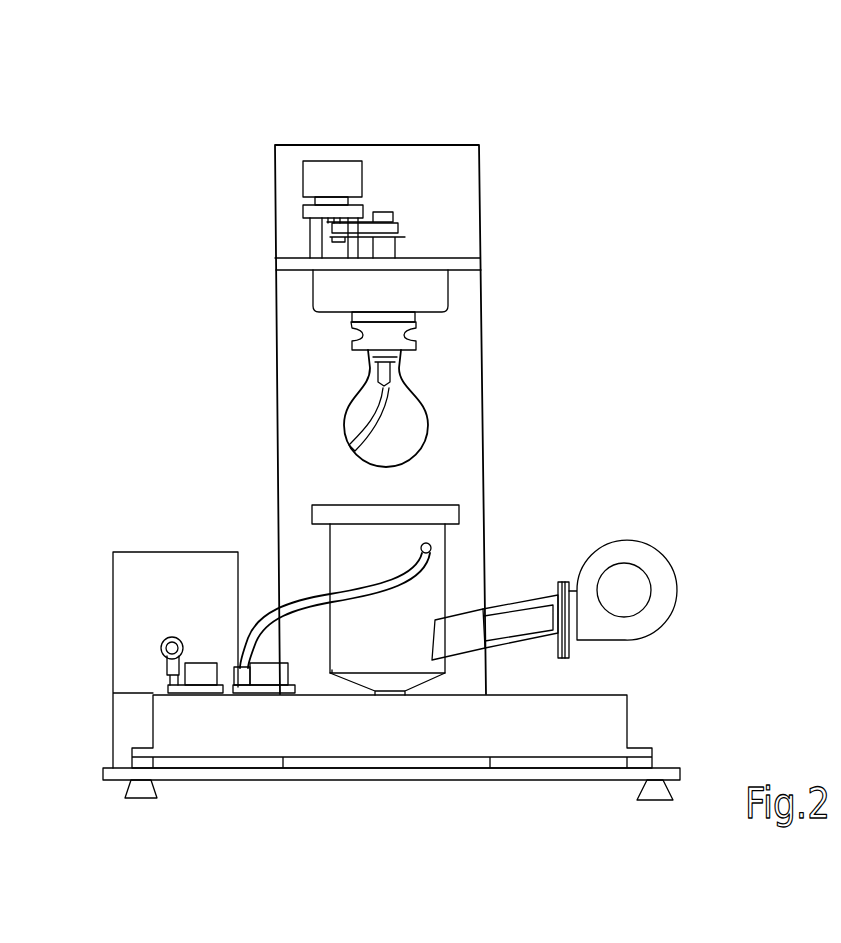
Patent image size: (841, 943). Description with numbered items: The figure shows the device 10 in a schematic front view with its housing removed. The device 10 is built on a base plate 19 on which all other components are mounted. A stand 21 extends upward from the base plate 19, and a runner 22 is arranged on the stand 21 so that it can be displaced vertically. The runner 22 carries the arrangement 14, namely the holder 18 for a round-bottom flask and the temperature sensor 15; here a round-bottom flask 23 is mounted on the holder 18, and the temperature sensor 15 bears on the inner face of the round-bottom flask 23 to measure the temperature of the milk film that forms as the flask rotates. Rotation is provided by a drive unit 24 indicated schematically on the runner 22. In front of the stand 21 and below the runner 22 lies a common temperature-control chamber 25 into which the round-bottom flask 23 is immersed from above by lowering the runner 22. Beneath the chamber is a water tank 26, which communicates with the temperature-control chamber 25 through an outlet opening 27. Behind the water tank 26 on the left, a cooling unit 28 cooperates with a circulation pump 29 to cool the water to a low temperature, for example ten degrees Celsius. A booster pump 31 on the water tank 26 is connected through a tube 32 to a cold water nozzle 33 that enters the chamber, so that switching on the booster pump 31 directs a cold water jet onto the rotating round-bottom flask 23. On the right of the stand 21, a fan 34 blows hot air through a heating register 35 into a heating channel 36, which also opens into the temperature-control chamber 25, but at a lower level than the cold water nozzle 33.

The device 10 is at (533, 108).
The arrangement 14 is at (440, 222).
The temperature sensor 15 is at (352, 447).
The holder 18 is at (412, 333).
The base plate 19 is at (203, 777).
The stand 21 is at (463, 466).
The runner 22 is at (470, 267).
The round-bottom flask 23 is at (428, 418).
The drive unit 24 is at (365, 193).
The temperature-control chamber 25 is at (430, 580).
The water tank 26 is at (612, 727).
The outlet opening 27 is at (392, 692).
The cooling unit 28 is at (128, 582).
The circulation pump 29 is at (188, 675).
The booster pump 31 is at (262, 680).
The tube 32 is at (255, 628).
The cold water nozzle 33 is at (430, 545).
The fan 34 is at (663, 592).
The heating register 35 is at (538, 602).
The heating channel 36 is at (467, 643).